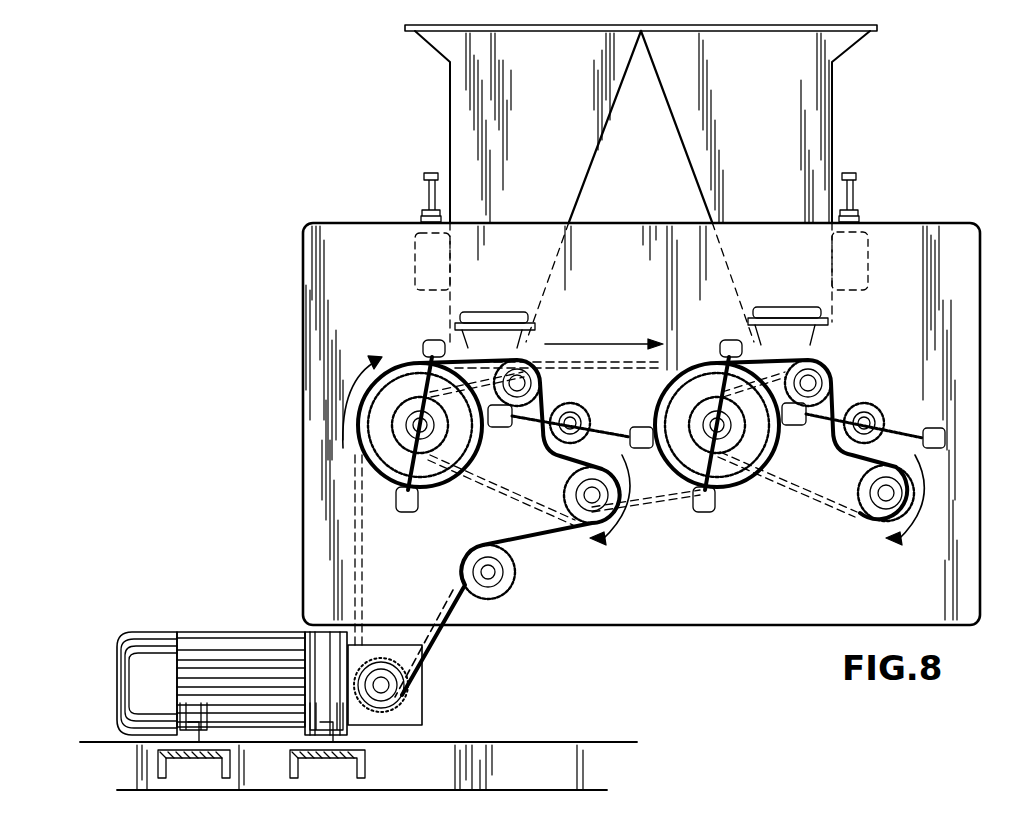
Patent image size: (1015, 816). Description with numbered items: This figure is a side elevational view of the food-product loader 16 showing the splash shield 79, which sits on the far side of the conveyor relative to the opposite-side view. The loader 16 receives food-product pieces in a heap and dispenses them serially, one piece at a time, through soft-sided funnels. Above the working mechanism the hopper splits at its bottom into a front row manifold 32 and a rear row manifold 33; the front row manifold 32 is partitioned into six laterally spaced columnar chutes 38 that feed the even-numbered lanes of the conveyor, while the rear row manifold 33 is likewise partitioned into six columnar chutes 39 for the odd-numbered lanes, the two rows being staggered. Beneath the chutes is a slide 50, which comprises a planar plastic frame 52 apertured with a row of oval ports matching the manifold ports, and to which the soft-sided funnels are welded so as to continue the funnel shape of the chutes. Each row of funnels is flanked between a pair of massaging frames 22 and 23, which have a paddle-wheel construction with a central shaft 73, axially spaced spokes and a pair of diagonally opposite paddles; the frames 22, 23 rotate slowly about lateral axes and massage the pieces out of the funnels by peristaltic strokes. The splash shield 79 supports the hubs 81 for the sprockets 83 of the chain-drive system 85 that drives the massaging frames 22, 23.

The food-product loader 16 is at (260, 410).
The massaging frame 22 is at (420, 352).
The massaging frame 23 is at (636, 428).
The front row manifold 32 is at (597, 185).
The columnar chute 38 is at (450, 100).
The rear row manifold 33 is at (826, 176).
The columnar chute 39 is at (835, 98).
The slide 50 is at (841, 323).
The planar frame 52 is at (808, 325).
The central shaft 73 is at (862, 412).
The splash shield 79 is at (697, 617).
The hub 81 is at (503, 556).
The sprocket 83 is at (492, 576).
The chain-drive system 85 is at (456, 582).